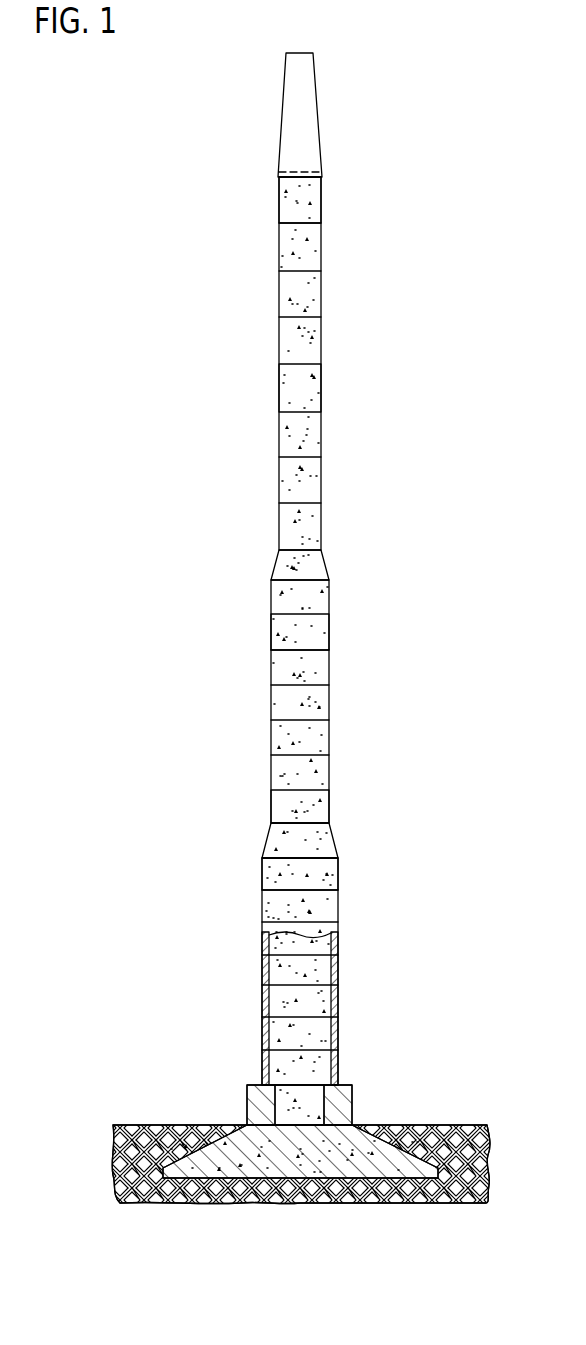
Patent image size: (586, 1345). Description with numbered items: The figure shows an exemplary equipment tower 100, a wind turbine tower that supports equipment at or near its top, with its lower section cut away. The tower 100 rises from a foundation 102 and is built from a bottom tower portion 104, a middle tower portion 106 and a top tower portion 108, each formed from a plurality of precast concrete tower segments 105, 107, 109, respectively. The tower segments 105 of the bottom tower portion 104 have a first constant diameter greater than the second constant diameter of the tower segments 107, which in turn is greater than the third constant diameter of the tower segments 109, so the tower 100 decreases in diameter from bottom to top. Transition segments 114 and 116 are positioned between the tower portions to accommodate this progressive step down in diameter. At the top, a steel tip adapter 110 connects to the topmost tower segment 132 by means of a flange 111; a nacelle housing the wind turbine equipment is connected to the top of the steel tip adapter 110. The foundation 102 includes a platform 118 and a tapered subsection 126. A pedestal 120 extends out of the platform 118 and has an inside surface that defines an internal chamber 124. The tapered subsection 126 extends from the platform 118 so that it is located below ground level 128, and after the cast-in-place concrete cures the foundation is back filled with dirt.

The equipment tower 100 is at (226, 105).
The foundation 102 is at (444, 1077).
The bottom tower portion 104 is at (243, 952).
The tower segments 105 is at (276, 876).
The middle tower portion 106 is at (250, 722).
The tower segments 107 is at (284, 638).
The top tower portion 108 is at (250, 303).
The tower segments 109 is at (291, 391).
The steel tip adapter 110 is at (317, 113).
The flange 111 is at (318, 175).
The transition segment 114 is at (336, 846).
The transition segment 116 is at (327, 566).
The platform 118 is at (297, 1127).
The pedestal 120 is at (353, 1101).
The internal chamber 124 is at (320, 1032).
The tapered subsection 126 is at (296, 1165).
The ground level 128 is at (453, 1125).
The topmost tower segment 132 is at (292, 201).